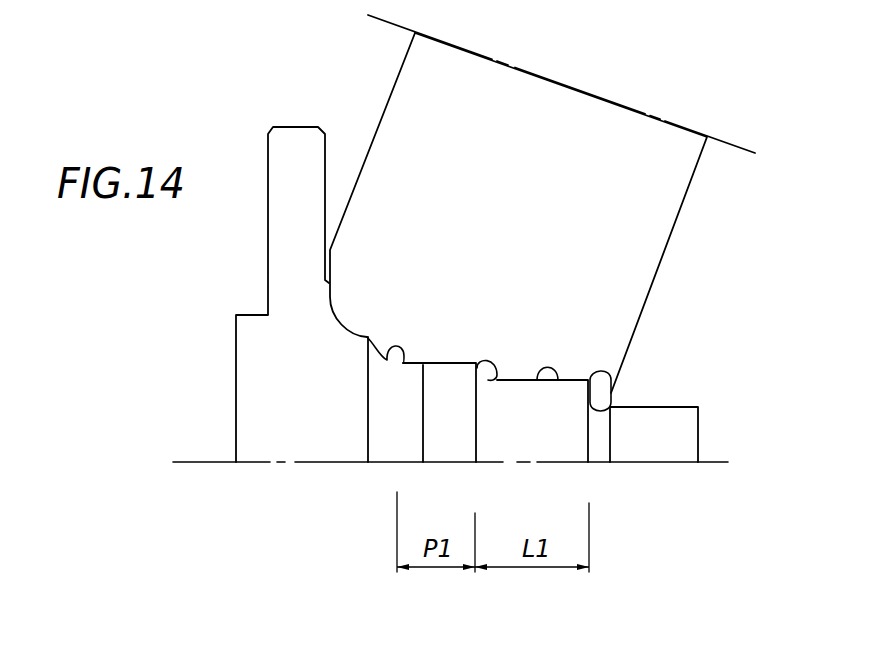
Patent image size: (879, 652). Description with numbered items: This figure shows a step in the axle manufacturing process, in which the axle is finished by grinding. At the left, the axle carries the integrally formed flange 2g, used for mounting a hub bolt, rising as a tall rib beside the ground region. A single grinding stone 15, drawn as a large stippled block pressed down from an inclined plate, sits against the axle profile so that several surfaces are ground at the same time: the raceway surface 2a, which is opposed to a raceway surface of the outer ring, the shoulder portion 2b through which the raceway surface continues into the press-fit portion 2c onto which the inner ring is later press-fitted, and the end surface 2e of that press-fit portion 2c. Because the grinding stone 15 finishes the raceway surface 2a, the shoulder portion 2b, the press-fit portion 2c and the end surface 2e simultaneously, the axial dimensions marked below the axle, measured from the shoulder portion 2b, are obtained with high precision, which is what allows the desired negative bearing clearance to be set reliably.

The flange 2g is at (278, 138).
The grinding stone 15 is at (650, 238).
The raceway surface 2a is at (398, 366).
The shoulder portion 2b is at (497, 381).
The press-fit portion 2c is at (551, 381).
The end surface of the press-fit portion 2e is at (610, 386).